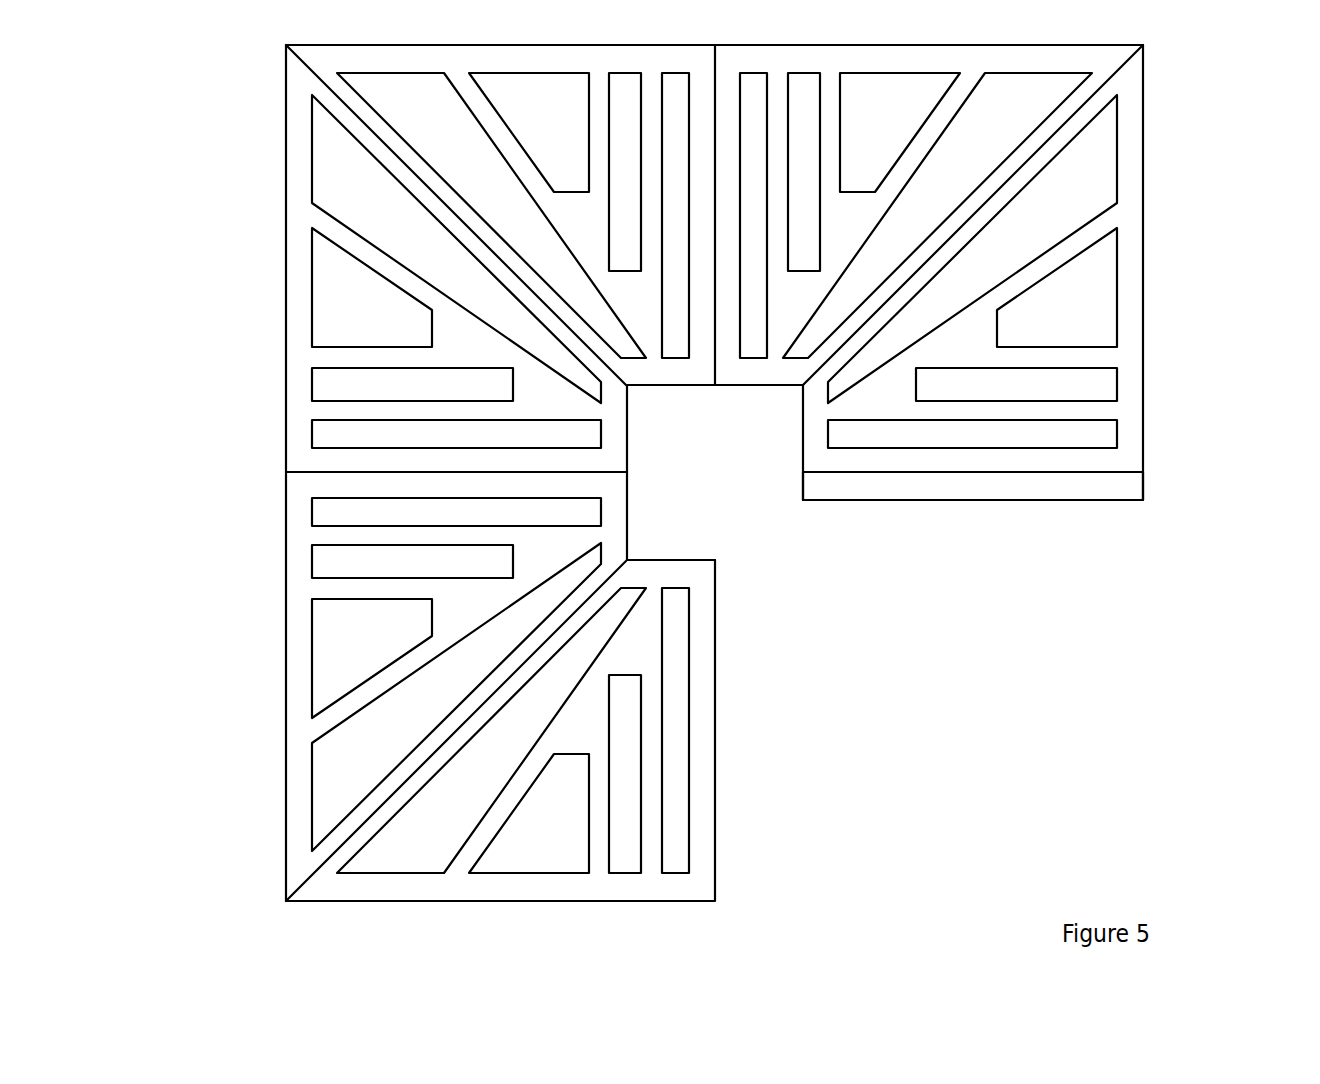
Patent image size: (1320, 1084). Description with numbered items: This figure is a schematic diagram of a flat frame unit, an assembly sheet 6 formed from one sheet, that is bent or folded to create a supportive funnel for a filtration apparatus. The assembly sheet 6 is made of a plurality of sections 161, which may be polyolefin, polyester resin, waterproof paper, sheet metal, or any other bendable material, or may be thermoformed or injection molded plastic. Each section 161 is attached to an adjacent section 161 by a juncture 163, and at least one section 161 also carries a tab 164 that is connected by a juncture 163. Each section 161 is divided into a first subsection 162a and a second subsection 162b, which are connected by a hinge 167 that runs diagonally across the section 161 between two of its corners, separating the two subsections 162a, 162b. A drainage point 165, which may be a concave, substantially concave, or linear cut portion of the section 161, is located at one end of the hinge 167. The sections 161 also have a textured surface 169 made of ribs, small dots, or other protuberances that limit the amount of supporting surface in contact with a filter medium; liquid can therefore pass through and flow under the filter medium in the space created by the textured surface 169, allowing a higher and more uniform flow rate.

The assembly sheet 6 is at (700, 506).
The section 161 is at (281, 652).
The first subsection 162a is at (291, 770).
The second subsection 162b is at (418, 888).
The juncture 163 is at (318, 470).
The tab 164 is at (1077, 503).
The drainage point 165 is at (796, 393).
The hinge 167 is at (1110, 79).
The textured surface 169 is at (1097, 318).